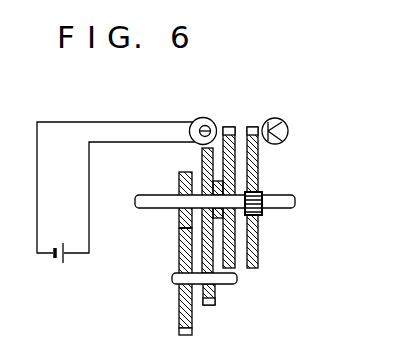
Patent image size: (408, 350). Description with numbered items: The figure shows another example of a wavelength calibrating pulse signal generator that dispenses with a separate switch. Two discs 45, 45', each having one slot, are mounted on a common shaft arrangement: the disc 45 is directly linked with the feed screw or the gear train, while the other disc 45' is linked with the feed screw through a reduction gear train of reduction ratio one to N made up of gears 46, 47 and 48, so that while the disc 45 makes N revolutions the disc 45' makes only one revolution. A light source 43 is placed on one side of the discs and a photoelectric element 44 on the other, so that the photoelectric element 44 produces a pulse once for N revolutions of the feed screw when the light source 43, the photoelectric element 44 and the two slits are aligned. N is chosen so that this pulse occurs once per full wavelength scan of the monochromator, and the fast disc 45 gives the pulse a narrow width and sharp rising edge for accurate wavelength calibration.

The light source 43 is at (199, 118).
The photoelectric element 44 is at (288, 108).
The disc 45 is at (254, 168).
The disc 45' is at (216, 168).
The gear 46 is at (179, 189).
The gear 47 is at (179, 264).
The gear 48 is at (202, 166).